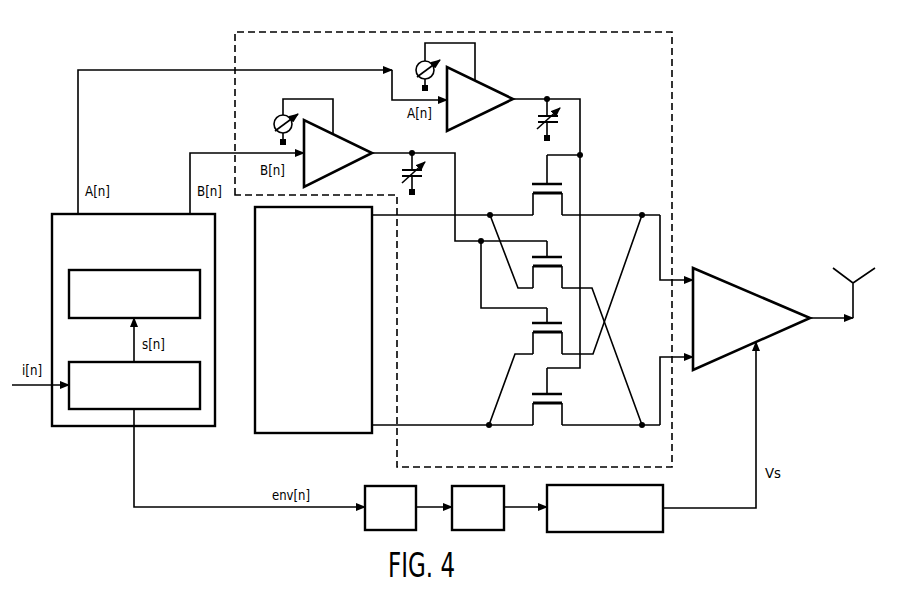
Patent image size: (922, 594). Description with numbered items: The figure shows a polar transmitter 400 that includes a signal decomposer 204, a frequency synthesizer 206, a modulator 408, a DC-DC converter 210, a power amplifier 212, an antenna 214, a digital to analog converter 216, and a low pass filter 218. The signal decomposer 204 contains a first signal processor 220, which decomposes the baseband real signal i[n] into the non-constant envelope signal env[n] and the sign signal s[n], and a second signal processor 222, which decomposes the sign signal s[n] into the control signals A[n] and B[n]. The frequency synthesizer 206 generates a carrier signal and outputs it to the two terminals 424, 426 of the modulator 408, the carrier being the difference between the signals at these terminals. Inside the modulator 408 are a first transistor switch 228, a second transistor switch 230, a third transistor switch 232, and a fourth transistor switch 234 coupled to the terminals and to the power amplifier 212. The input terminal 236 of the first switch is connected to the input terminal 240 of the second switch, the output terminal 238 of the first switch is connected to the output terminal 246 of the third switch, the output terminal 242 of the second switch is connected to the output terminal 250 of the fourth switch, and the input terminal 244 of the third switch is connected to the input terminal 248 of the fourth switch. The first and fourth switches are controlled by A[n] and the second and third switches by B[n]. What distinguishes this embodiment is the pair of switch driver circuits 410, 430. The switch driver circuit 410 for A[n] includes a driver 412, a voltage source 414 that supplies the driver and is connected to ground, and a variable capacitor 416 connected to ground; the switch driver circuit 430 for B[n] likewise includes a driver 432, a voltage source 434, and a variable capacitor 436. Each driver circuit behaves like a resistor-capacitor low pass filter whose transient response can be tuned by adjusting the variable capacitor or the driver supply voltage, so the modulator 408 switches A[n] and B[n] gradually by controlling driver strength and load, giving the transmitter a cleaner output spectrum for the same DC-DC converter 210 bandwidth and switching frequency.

The signal decomposer 204 is at (50, 226).
The frequency synthesizer 206 is at (326, 345).
The DC-DC converter 210 is at (665, 520).
The power amplifier 212 is at (730, 282).
The antenna 214 is at (850, 278).
The digital to analog converter 216 is at (365, 521).
The low pass filter 218 is at (505, 522).
The first signal processor 220 is at (103, 411).
The second signal processor 222 is at (68, 293).
The first transistor switch 228 is at (565, 188).
The second transistor switch 230 is at (577, 263).
The third transistor switch 232 is at (568, 336).
The fourth transistor switch 234 is at (565, 400).
The input terminal of the first transistor switch 236 is at (487, 228).
The output terminal of the first transistor switch 238 is at (574, 222).
The input terminal of the second transistor switch 240 is at (518, 298).
The output terminal of the second transistor switch 242 is at (570, 291).
The input terminal of the third transistor switch 244 is at (513, 371).
The output terminal of the third transistor switch 246 is at (570, 358).
The input terminal of the fourth transistor switch 248 is at (520, 427).
The output terminal of the fourth transistor switch 250 is at (570, 428).
The polar transmitter 400 is at (733, 107).
The modulator 408 is at (672, 175).
The switch driver circuit 410 is at (478, 60).
The driver 412 is at (501, 92).
The voltage source 414 is at (419, 63).
The variable capacitor 416 is at (540, 118).
The terminal 424 is at (490, 212).
The terminal 426 is at (488, 430).
The switch driver circuit 430 is at (333, 108).
The driver 432 is at (347, 141).
The voltage source 434 is at (277, 116).
The variable capacitor 436 is at (402, 173).